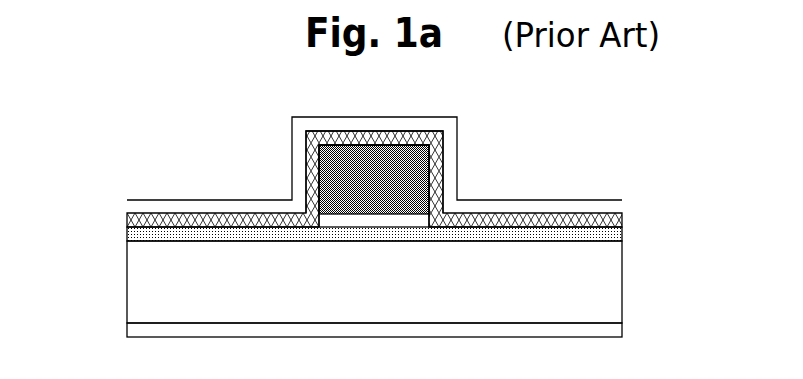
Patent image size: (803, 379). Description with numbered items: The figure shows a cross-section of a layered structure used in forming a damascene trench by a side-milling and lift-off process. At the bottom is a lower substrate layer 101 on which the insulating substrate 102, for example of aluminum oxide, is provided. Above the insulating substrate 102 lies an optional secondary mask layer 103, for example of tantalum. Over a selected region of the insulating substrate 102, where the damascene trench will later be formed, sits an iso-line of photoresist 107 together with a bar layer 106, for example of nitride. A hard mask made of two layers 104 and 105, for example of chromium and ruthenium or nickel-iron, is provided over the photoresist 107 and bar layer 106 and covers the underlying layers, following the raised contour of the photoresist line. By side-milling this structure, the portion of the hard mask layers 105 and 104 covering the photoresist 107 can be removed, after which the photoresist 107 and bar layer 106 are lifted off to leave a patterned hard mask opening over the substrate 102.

The substrate 101 is at (127, 329).
The insulating substrate 102 is at (127, 282).
The secondary mask layer 103 is at (127, 233).
The hard mask layer 104 is at (622, 222).
The hard mask layer 105 is at (127, 207).
The bar layer 106 is at (403, 213).
The iso-line of photoresist 107 is at (432, 168).